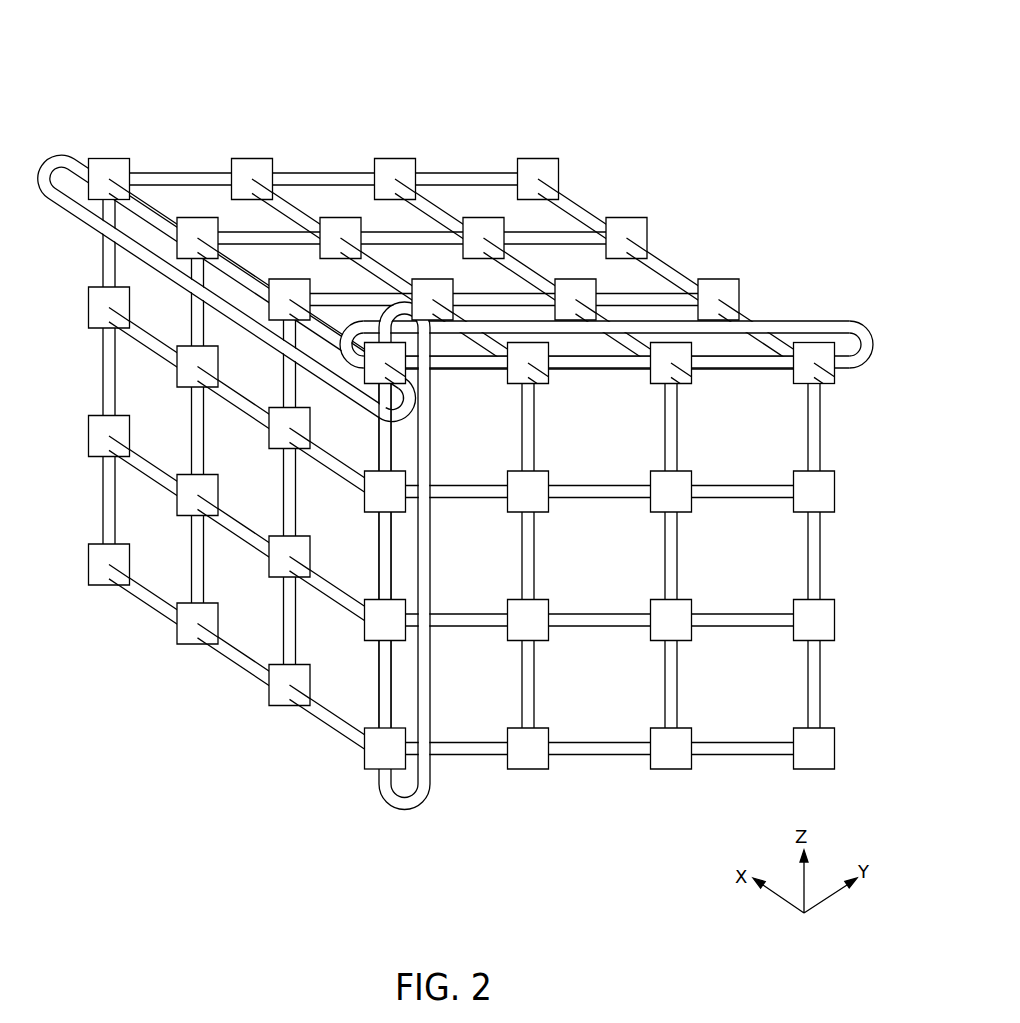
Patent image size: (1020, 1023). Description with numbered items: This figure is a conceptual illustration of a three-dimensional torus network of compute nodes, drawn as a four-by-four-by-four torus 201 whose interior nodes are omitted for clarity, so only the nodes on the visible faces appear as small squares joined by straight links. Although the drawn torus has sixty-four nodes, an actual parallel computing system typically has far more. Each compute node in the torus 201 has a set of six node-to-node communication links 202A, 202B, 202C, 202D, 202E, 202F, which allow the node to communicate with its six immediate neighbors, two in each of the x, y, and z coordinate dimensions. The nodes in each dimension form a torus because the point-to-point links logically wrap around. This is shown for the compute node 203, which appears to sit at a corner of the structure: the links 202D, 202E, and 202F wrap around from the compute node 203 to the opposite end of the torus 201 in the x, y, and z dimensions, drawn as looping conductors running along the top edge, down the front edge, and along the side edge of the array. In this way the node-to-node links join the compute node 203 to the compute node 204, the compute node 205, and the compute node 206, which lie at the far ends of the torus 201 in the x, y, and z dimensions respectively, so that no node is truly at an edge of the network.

The torus 201 is at (455, 438).
The node-to-node communication link 202A is at (450, 369).
The node-to-node communication link 202B is at (391, 448).
The node-to-node communication link 202C is at (345, 340).
The node-to-node communication link 202D is at (836, 322).
The node-to-node communication link 202E is at (406, 810).
The node-to-node communication link 202F is at (48, 156).
The compute node 203 is at (368, 388).
The compute node 204 is at (109, 165).
The compute node 205 is at (834, 380).
The compute node 206 is at (375, 754).